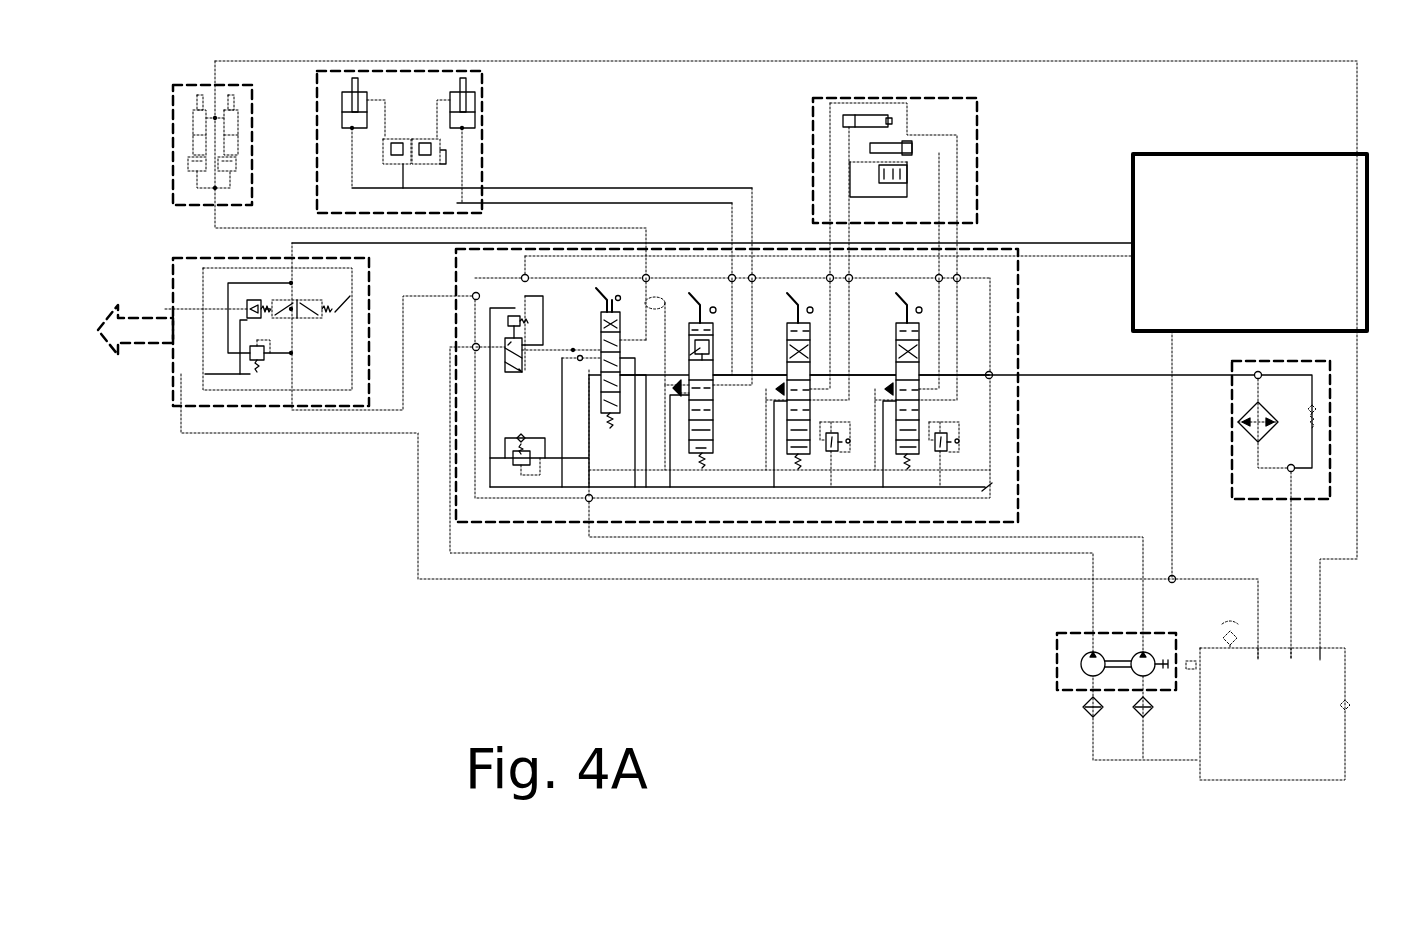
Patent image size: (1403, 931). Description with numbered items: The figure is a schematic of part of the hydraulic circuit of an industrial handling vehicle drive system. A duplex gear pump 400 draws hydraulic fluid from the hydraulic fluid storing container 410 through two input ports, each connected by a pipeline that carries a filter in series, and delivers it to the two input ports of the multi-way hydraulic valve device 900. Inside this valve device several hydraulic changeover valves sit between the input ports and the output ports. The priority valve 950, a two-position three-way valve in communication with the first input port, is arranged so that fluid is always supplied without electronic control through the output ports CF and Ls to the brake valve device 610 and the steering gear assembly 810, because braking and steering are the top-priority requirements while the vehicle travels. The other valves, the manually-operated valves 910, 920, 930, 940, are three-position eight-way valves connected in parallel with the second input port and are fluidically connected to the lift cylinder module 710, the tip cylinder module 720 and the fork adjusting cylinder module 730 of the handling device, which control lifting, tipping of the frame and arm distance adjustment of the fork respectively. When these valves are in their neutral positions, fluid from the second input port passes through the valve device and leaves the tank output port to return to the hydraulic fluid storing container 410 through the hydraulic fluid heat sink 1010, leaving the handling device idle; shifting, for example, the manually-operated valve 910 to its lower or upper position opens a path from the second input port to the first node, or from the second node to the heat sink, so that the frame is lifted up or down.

The duplex gear pump 400 is at (1095, 675).
The hydraulic fluid storing container 410 is at (1268, 717).
The brake valve device 610 is at (250, 326).
The lift cylinder module 710 is at (228, 145).
The tip cylinder module 720 is at (417, 142).
The fork adjusting cylinder module 730 is at (912, 188).
The steering gear assembly 810 is at (1268, 242).
The multi-way hydraulic valve device 900 is at (755, 385).
The manually-operated valve 910 is at (609, 382).
The manually-operated valve 920 is at (716, 382).
The manually-operated valve 930 is at (830, 382).
The manually-operated valve 940 is at (927, 382).
The priority valve 950 is at (510, 391).
The hydraulic fluid heat sink 1010 is at (1181, 430).